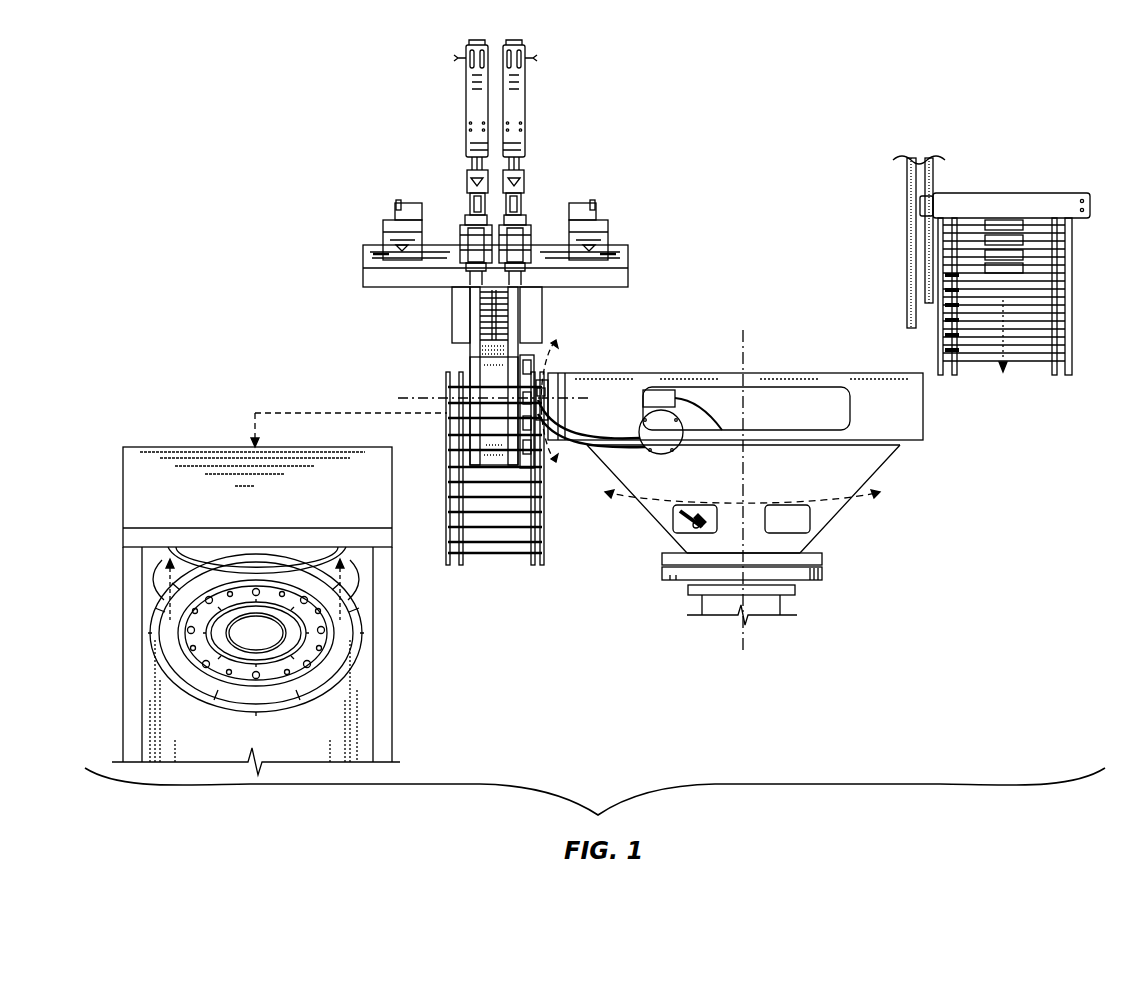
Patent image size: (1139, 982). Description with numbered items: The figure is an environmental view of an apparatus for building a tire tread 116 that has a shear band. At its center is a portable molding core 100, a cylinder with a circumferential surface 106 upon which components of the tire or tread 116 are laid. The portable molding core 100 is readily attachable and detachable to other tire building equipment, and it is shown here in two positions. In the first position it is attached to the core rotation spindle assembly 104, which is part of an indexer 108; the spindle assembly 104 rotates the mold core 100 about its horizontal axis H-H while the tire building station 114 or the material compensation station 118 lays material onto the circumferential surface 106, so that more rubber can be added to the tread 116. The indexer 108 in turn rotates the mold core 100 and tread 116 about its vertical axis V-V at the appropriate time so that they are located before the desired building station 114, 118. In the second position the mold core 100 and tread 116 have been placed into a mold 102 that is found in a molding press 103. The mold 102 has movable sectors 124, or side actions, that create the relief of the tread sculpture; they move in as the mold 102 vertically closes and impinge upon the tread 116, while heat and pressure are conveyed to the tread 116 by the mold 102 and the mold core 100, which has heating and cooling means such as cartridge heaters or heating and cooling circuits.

The portable molding core 100 is at (397, 376).
The mold 102 is at (347, 714).
The molding press 103 is at (185, 509).
The core rotation spindle assembly 104 is at (527, 381).
The circumferential surface 106 is at (473, 437).
The indexer 108 is at (732, 478).
The tire building station 114 is at (1028, 165).
The tread 116 is at (513, 424).
The material compensation station 118 is at (533, 219).
The movable sectors 124 is at (226, 694).